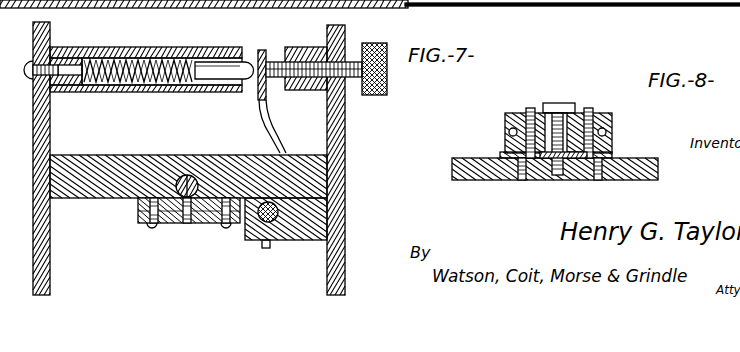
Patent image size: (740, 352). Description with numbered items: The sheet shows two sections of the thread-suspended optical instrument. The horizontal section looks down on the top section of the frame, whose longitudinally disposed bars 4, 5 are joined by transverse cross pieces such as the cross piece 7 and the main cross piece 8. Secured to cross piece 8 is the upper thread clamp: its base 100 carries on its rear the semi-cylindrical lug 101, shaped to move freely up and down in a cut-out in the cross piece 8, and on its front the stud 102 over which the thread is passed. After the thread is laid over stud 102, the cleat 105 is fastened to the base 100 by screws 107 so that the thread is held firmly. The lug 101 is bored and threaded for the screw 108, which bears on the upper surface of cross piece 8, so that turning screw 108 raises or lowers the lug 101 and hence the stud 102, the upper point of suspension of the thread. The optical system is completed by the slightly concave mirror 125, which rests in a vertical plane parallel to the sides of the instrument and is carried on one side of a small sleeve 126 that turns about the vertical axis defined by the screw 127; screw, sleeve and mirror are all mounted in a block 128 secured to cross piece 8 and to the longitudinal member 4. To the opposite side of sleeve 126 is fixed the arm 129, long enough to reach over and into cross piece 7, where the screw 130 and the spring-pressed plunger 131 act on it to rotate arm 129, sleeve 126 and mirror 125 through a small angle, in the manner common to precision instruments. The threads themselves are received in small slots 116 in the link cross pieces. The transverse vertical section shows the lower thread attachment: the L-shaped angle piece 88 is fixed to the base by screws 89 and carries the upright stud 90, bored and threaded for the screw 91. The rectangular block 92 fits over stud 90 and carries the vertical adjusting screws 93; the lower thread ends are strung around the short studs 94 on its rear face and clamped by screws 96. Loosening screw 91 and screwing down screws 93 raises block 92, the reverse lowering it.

In FIG. 7, the longitudinally disposed bar 4 is at (345, 130).
In FIG. 7, the longitudinally disposed bar 5 is at (33, 125).
In FIG. 7, the cross piece 7 is at (243, 47).
In FIG. 7, the cross piece 8 is at (125, 167).
In FIG. 8, the L-shaped angle piece 88 is at (616, 154).
In FIG. 8, the screws 89 is at (525, 180).
In FIG. 8, the upright stud 90 is at (560, 176).
In FIG. 8, the screw 91 is at (559, 104).
In FIG. 8, the rectangular block 92 is at (531, 108).
In FIG. 8, the vertical adjusting screws 93 is at (588, 108).
In FIG. 8, the short studs 94 is at (541, 183).
In FIG. 8, the screws 96 is at (509, 131).
In FIG. 7, the base of the thread clamp 100 is at (137, 208).
In FIG. 7, the semi-cylindrical lug 101 is at (181, 177).
In FIG. 7, the stud 102 is at (181, 226).
In FIG. 7, the cleat 105 is at (137, 220).
In FIG. 7, the screws 107 is at (152, 226).
In FIG. 7, the screw 108 is at (190, 176).
In FIG. 7, the slots 116 is at (182, 226).
In FIG. 7, the concave mirror 125 is at (262, 245).
In FIG. 7, the sleeve 126 is at (262, 220).
In FIG. 7, the screw 127 is at (271, 220).
In FIG. 7, the block 128 is at (320, 217).
In FIG. 7, the arm 129 is at (276, 128).
In FIG. 7, the screw 130 is at (352, 78).
In FIG. 7, the spring-pressed plunger 131 is at (210, 71).